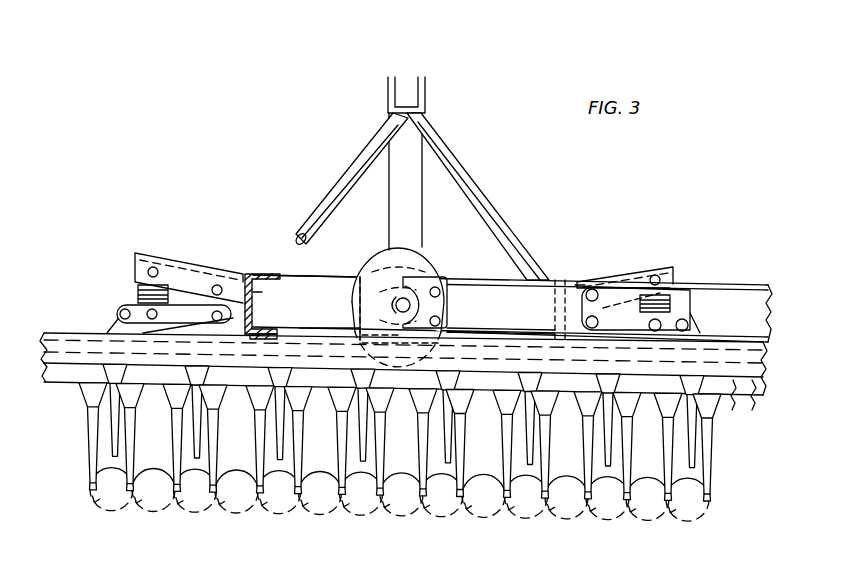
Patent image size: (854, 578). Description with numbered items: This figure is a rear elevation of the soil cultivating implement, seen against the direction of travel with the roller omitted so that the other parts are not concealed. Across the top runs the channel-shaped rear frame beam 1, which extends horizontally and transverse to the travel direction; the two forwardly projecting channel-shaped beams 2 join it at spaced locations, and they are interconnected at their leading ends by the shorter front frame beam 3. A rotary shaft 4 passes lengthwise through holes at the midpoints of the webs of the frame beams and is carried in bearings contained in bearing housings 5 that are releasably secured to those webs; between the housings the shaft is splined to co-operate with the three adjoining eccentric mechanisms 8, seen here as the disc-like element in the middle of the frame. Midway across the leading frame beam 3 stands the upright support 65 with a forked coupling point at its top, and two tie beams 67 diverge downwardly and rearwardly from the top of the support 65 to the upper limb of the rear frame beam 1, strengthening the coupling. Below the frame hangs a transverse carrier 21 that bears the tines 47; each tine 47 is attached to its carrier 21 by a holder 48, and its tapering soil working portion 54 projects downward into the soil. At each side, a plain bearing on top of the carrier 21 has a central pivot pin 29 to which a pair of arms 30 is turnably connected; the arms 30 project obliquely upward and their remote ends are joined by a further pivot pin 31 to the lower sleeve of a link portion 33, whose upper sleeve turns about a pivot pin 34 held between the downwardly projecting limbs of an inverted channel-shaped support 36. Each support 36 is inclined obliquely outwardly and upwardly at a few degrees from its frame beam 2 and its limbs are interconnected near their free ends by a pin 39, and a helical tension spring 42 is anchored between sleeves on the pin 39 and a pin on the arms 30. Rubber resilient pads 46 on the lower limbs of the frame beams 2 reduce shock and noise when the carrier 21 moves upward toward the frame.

The beam 1 is at (690, 284).
The beams 2 is at (258, 275).
The frame beam 3 is at (341, 276).
The rotary shaft 4 is at (396, 308).
The bearing housings 5 is at (446, 278).
The eccentric mechanisms 8 is at (431, 253).
The carrier 21 is at (740, 396).
The pivot pin 29 is at (118, 315).
The arms 30 is at (124, 305).
The pivot pin 31 is at (253, 318).
The link portion 33 is at (262, 294).
The pivot pin 34 is at (220, 285).
The support 36 is at (195, 262).
The pin 39 is at (153, 267).
The helical tension spring 42 is at (137, 290).
The resilient pads 46 is at (325, 313).
The tines 47 is at (168, 437).
The holder 48 is at (214, 400).
The soil working portion 54 is at (525, 459).
The upright support 65 is at (426, 78).
The tie beams 67 is at (339, 191).